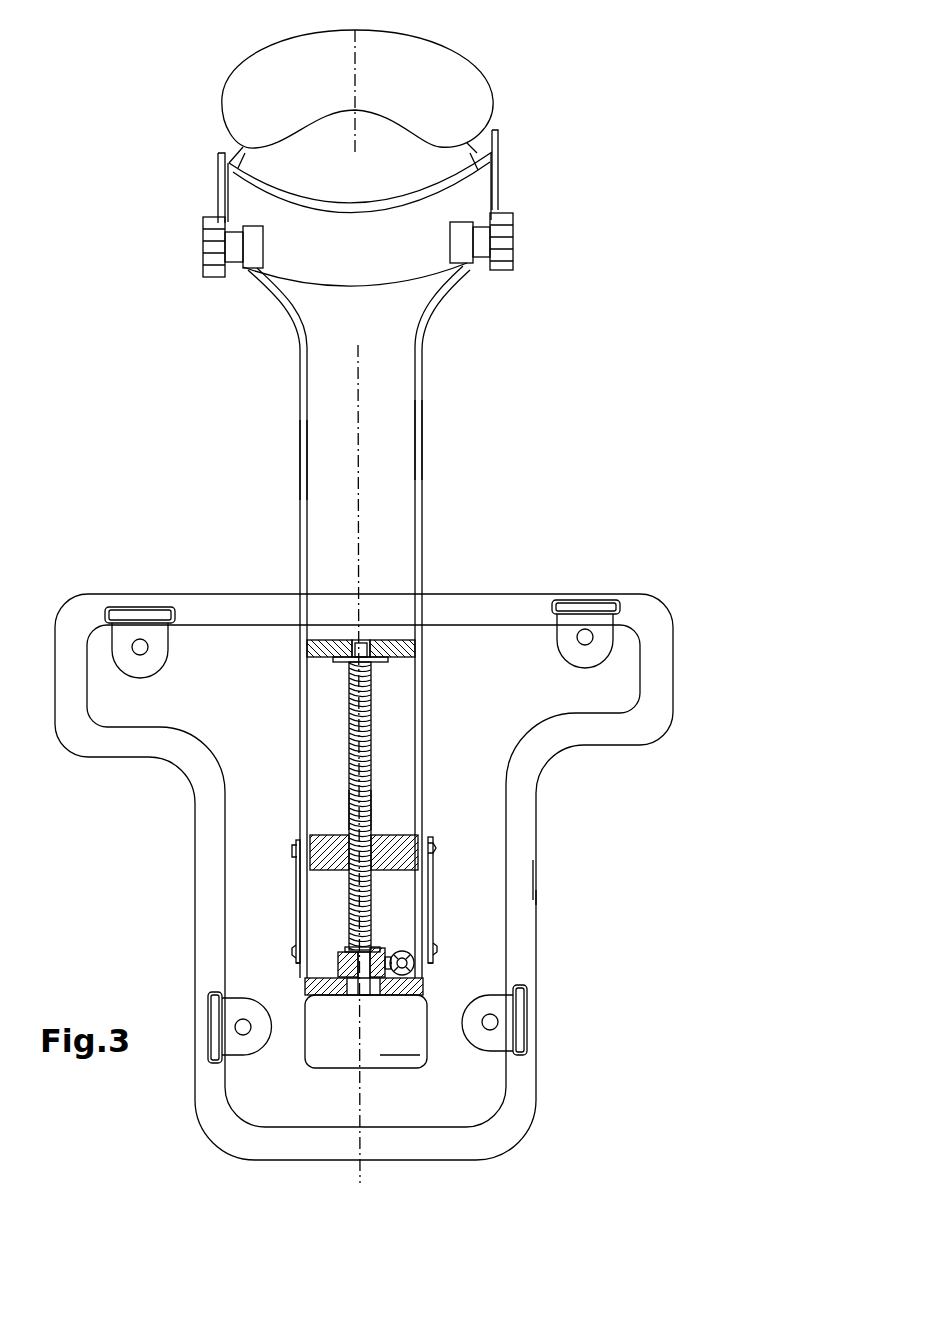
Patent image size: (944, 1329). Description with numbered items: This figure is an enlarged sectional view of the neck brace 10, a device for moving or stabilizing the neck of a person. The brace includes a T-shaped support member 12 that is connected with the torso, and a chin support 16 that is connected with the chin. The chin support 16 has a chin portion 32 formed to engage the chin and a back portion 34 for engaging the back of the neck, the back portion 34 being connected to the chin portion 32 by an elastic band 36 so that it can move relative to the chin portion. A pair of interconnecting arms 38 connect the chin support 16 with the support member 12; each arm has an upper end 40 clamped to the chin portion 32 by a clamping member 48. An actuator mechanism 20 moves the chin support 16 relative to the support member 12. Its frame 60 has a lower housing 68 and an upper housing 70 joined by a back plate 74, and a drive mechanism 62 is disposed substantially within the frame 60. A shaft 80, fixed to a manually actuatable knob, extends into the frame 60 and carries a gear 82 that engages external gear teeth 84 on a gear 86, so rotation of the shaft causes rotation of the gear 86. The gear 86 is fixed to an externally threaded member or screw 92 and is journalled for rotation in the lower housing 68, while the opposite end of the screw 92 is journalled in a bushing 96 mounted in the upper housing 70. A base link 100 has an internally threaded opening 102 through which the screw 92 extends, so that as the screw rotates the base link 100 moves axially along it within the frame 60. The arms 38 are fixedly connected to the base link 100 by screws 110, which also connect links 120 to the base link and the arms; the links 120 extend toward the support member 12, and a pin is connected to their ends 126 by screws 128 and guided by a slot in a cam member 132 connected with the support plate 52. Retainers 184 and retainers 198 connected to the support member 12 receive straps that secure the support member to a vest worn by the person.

The neck brace 10 is at (91, 192).
The T-shaped support member 12 is at (533, 897).
The chin support 16 is at (402, 263).
The actuator mechanism 20 is at (255, 865).
The chin portion 32 is at (317, 272).
The back portion 34 is at (298, 93).
The elastic band 36 is at (490, 125).
The interconnecting arms 38 is at (298, 460).
The upper end 40 is at (252, 283).
The clamping members 48 is at (203, 241).
The support plate 52 is at (483, 1080).
The frame 60 is at (398, 700).
The drive mechanism 62 is at (533, 898).
The lower housing 68 is at (422, 990).
The upper housing 70 is at (390, 637).
The back plate 74 is at (325, 690).
The shaft 80 is at (414, 966).
The gear 82 is at (405, 950).
The external gear teeth 84 is at (340, 962).
The gear 86 is at (360, 975).
The externally threaded member (screw) 92 is at (370, 737).
The bushing 96 is at (352, 647).
The base link 100 is at (400, 826).
The internally threaded opening 102 is at (352, 810).
The screws 110 is at (290, 852).
The links 120 is at (296, 902).
The ends 126 is at (297, 963).
The screws 128 is at (292, 952).
The cam member 132 is at (402, 1055).
The retainers 184 is at (125, 635).
The retainers 198 is at (228, 1045).